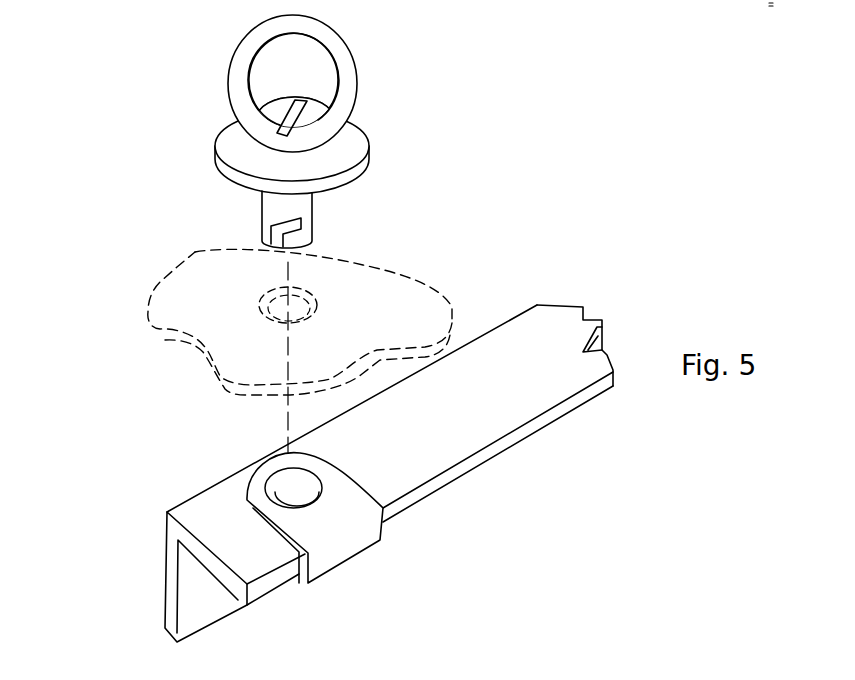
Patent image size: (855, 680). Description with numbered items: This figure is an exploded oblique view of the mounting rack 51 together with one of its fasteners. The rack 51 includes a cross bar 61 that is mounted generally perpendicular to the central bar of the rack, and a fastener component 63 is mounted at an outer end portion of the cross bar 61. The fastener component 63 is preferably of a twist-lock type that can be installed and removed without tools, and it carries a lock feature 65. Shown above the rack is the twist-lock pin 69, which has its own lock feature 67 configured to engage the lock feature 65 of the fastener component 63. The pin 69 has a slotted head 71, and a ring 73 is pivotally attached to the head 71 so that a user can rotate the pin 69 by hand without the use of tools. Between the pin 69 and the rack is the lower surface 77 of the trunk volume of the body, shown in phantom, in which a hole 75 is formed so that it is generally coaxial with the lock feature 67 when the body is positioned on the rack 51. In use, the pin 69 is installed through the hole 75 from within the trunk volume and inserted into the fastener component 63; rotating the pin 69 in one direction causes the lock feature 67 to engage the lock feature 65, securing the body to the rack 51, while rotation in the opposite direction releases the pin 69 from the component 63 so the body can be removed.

The rack 51 is at (544, 428).
The cross bar 61 is at (518, 317).
The fastener component 63 is at (350, 557).
The lock feature 65 is at (300, 497).
The lock feature 67 is at (300, 230).
The twist-lock pin 69 is at (368, 156).
The slotted head 71 is at (283, 118).
The ring 73 is at (343, 58).
The hole 75 is at (258, 302).
The lower surface 77 is at (175, 293).